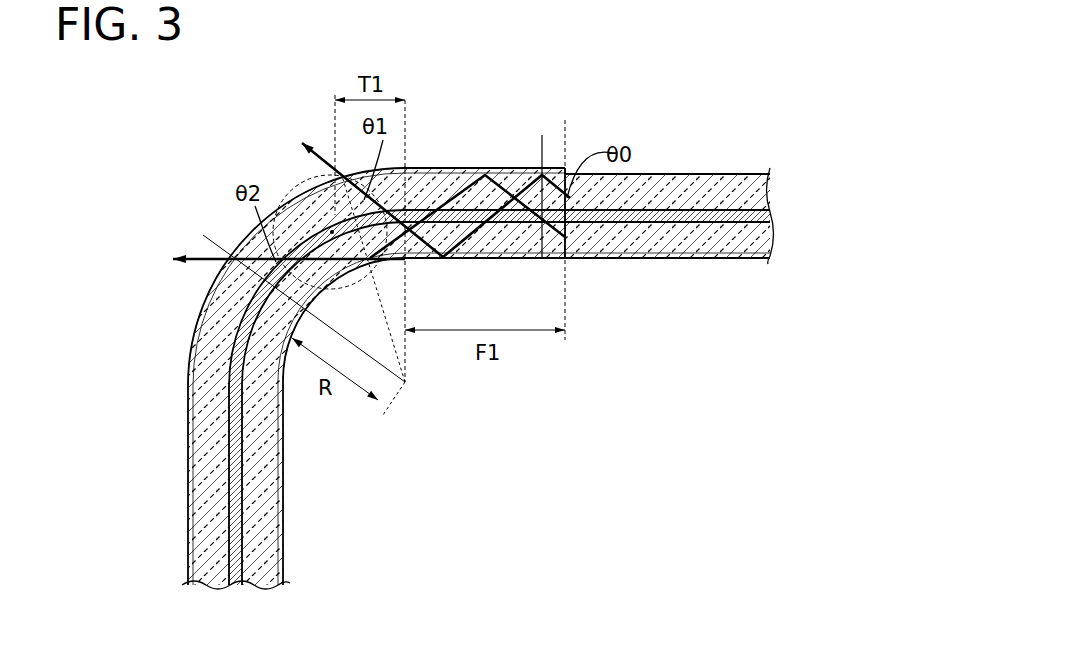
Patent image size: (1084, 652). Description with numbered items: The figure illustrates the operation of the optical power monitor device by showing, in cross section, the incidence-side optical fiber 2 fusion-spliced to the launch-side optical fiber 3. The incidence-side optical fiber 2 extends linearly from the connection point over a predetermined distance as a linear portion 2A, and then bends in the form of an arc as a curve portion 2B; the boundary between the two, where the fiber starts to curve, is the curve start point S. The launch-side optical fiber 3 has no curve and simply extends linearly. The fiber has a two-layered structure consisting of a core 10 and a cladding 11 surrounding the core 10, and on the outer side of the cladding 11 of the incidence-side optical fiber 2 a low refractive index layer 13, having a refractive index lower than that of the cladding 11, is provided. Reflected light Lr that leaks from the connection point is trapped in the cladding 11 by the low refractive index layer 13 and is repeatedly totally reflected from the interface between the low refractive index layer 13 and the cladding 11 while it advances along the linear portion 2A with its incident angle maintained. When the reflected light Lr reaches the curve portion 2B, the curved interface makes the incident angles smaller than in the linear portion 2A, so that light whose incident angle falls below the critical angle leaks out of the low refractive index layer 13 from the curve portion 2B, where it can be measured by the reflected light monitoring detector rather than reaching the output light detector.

The incidence-side optical fiber 2 is at (558, 156).
The linear portion 2A is at (458, 156).
The curve portion 2B is at (231, 231).
The launch-side optical fiber 3 is at (672, 163).
The core 10 is at (705, 220).
The cladding 11 is at (634, 260).
The low refractive index layer 13 is at (512, 170).
The reflected light Lr is at (497, 176).
The curve start point S is at (405, 166).